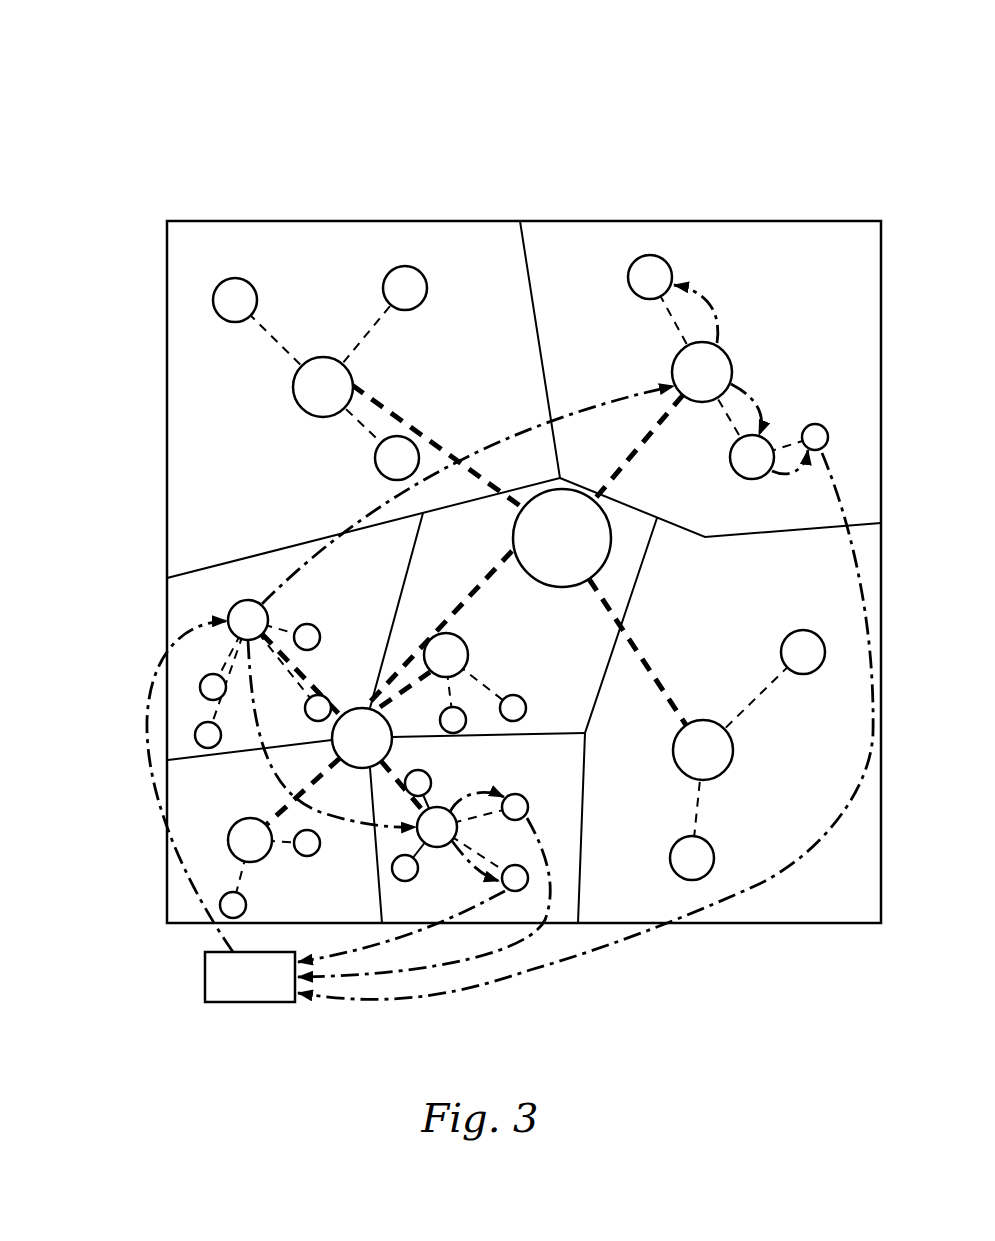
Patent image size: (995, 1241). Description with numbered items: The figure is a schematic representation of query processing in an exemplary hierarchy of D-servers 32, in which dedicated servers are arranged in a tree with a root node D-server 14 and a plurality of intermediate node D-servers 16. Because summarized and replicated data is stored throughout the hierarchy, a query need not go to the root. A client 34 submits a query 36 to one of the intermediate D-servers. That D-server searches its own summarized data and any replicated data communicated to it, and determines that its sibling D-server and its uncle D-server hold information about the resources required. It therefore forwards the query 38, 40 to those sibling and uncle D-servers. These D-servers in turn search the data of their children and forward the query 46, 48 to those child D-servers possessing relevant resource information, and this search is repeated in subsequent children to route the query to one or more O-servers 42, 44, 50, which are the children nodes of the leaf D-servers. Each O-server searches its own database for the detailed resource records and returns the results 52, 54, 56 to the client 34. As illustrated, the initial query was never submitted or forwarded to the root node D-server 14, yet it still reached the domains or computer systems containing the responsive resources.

The root node D-server 14 is at (610, 555).
The intermediate node D-server 16 is at (300, 386).
The hierarchy of D-servers 32 is at (187, 124).
The client 34 is at (205, 970).
The query 36 is at (127, 826).
The forwarded query 38 is at (333, 823).
The forwarded query 40 is at (490, 437).
The O-server 42 is at (448, 866).
The O-server 44 is at (480, 784).
The forwarded query to child D-server 46 is at (760, 400).
The forwarded query to child D-server 48 is at (702, 294).
The O-server 50 is at (776, 484).
The returned results 52 is at (397, 935).
The returned results 54 is at (557, 890).
The returned results 56 is at (758, 882).